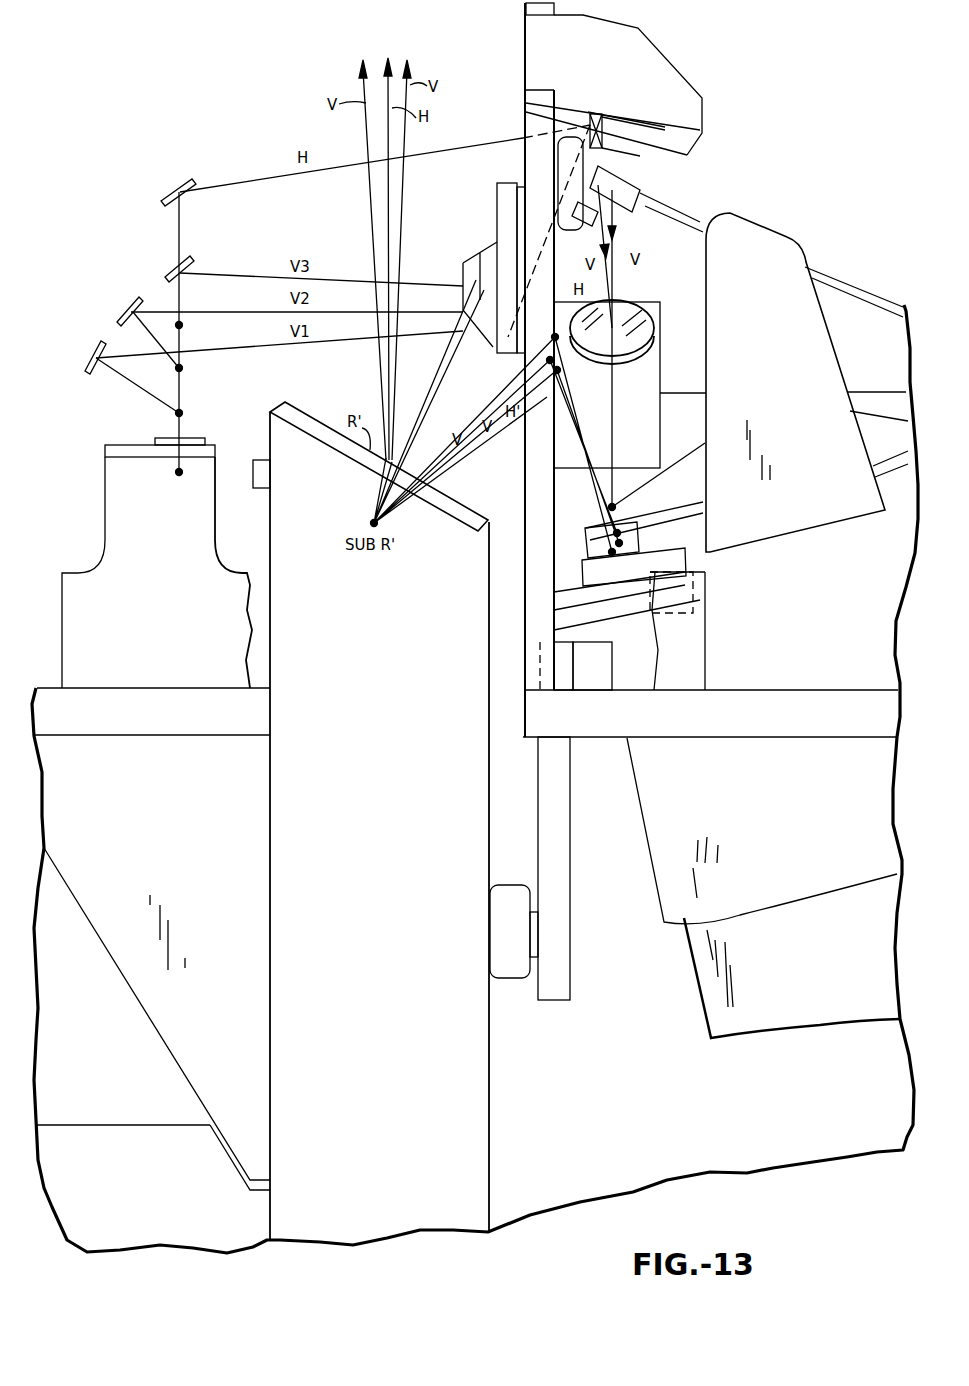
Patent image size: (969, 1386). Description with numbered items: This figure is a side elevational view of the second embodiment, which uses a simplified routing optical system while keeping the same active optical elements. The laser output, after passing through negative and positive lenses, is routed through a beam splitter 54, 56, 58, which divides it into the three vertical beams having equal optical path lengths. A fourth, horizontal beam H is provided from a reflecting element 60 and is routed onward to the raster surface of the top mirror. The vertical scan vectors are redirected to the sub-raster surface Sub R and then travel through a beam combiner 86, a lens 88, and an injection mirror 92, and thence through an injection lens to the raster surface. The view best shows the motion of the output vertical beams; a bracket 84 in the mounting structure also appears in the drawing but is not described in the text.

The beam splitter 54 is at (88, 348).
The beam splitter 56 is at (128, 300).
The beam splitter 58 is at (170, 262).
The reflecting element 60 is at (187, 178).
The mounting bracket 84 is at (645, 152).
The beam combiner 86 is at (633, 223).
The lens 88 is at (623, 308).
The injection mirror 92 is at (547, 400).